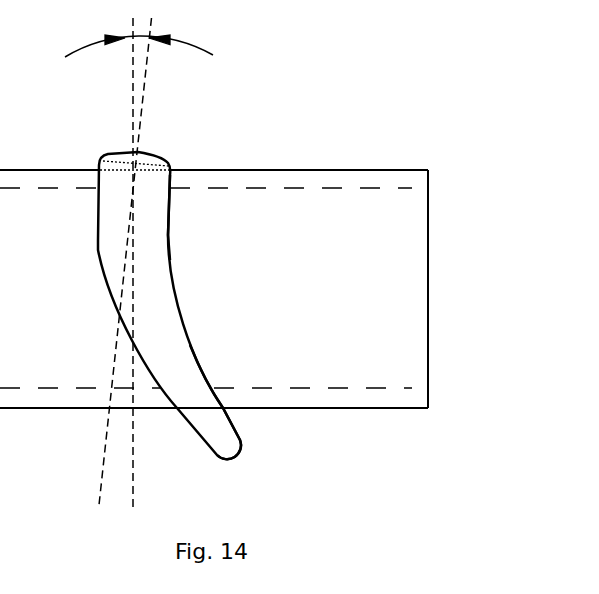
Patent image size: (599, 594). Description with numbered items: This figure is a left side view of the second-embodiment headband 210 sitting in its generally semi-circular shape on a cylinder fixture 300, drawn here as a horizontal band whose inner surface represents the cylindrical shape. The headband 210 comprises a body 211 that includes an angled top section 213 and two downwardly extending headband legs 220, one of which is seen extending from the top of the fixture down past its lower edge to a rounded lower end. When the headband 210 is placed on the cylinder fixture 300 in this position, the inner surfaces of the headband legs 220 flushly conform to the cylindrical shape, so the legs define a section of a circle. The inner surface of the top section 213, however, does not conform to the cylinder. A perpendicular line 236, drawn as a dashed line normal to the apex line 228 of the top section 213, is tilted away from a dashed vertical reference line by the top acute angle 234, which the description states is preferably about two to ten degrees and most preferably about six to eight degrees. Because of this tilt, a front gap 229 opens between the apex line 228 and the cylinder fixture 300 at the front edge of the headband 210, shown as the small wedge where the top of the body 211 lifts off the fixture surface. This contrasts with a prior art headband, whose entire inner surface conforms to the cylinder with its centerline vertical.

The cylinder fixture 300 is at (342, 168).
The perpendicular line 236 is at (140, 120).
The top acute angle 234 is at (192, 43).
The body 211 is at (178, 308).
The top section 213 is at (168, 240).
The headband legs 220 is at (210, 388).
The headband 210 is at (240, 458).
The apex line 228 is at (120, 163).
The front gap 229 is at (97, 163).